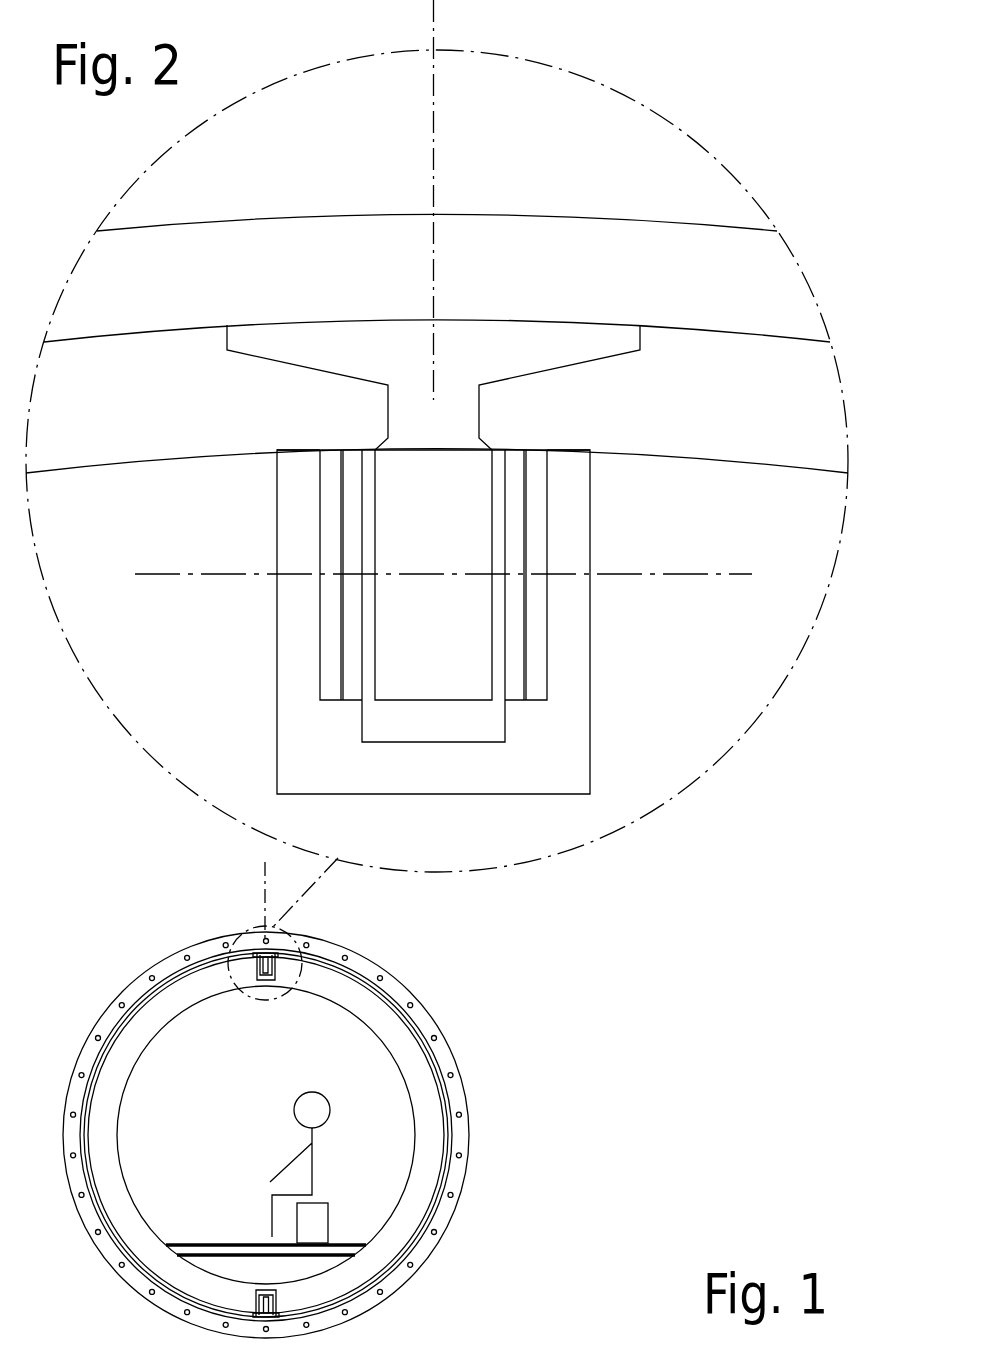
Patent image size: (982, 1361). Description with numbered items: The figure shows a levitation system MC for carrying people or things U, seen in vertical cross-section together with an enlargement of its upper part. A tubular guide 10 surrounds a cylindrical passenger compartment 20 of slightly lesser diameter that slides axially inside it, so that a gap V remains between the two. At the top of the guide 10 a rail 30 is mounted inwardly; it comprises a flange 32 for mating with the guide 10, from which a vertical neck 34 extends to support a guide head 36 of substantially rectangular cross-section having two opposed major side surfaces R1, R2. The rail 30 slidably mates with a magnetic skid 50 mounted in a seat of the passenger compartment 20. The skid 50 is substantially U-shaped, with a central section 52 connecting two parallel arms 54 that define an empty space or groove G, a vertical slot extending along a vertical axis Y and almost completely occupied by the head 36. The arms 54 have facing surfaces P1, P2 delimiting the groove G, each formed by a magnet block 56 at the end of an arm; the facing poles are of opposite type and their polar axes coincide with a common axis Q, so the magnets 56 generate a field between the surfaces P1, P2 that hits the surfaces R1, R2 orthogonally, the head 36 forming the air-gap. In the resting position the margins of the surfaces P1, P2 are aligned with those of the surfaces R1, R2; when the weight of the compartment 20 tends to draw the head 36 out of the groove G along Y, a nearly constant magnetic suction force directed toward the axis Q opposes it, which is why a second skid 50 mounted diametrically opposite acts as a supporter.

In FIG. 2, the tubular guide 10 is at (683, 289).
In FIG. 1, the tubular guide 10 is at (448, 1207).
In FIG. 2, the passenger compartment 20 is at (112, 415).
In FIG. 1, the passenger compartment 20 is at (398, 1062).
In FIG. 2, the rail 30 is at (365, 336).
In FIG. 2, the flange 32 is at (640, 331).
In FIG. 2, the vertical neck 34 is at (479, 418).
In FIG. 2, the guide head 36 is at (452, 616).
In FIG. 2, the magnetic skid 50 is at (440, 694).
In FIG. 1, the magnetic skid 50 is at (260, 1010).
In FIG. 2, the central section 52 is at (433, 794).
In FIG. 2, the arms 54 is at (282, 604).
In FIG. 2, the magnet block 56 is at (350, 687).
In FIG. 2, the gap V is at (762, 411).
In FIG. 1, the gap V is at (431, 1052).
In FIG. 1, the people or things U is at (316, 1120).
In FIG. 1, the levitation system MC is at (541, 1107).
In FIG. 2, the vertical axis Y is at (434, 155).
In FIG. 1, the vertical axis Y is at (265, 877).
In FIG. 2, the common axis Q is at (702, 574).
In FIG. 2, the groove G is at (367, 445).
In FIG. 2, the major side surface R1 is at (496, 486).
In FIG. 2, the major side surface R2 is at (373, 481).
In FIG. 2, the facing surface P1 is at (495, 498).
In FIG. 2, the facing surface P2 is at (363, 593).